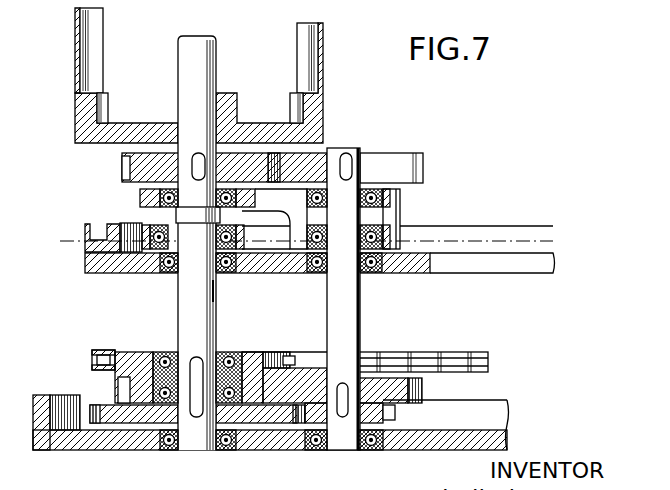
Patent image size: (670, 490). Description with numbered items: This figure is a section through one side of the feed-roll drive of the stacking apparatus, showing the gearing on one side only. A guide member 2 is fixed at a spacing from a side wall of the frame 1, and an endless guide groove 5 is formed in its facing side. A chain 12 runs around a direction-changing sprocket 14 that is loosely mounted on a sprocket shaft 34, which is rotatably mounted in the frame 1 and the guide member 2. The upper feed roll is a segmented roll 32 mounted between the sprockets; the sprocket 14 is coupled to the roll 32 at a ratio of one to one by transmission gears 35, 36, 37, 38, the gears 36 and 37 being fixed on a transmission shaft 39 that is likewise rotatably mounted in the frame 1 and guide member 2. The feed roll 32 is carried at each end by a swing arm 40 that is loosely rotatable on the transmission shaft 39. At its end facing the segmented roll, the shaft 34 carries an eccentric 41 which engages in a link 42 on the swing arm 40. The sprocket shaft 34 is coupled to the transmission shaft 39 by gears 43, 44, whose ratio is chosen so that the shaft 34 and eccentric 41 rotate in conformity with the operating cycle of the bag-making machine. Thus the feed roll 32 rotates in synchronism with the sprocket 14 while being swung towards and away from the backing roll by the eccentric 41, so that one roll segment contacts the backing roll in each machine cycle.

The frame 1 is at (497, 418).
The guide member 2 is at (546, 240).
The guide groove 5 is at (87, 232).
The chain 12 is at (425, 353).
The direction-changing sprocket 14 is at (130, 358).
The segmented feed roll 32 is at (84, 40).
The sprocket shaft 34 is at (190, 299).
The transmission gear 35 is at (127, 386).
The transmission gear 36 is at (420, 390).
The transmission gear 37 is at (389, 162).
The transmission gear 38 is at (145, 160).
The transmission shaft 39 is at (355, 320).
The swing arm 40 is at (143, 198).
The eccentric 41 is at (214, 291).
The link 42 is at (177, 220).
The gear 43 is at (395, 415).
The gear 44 is at (120, 415).